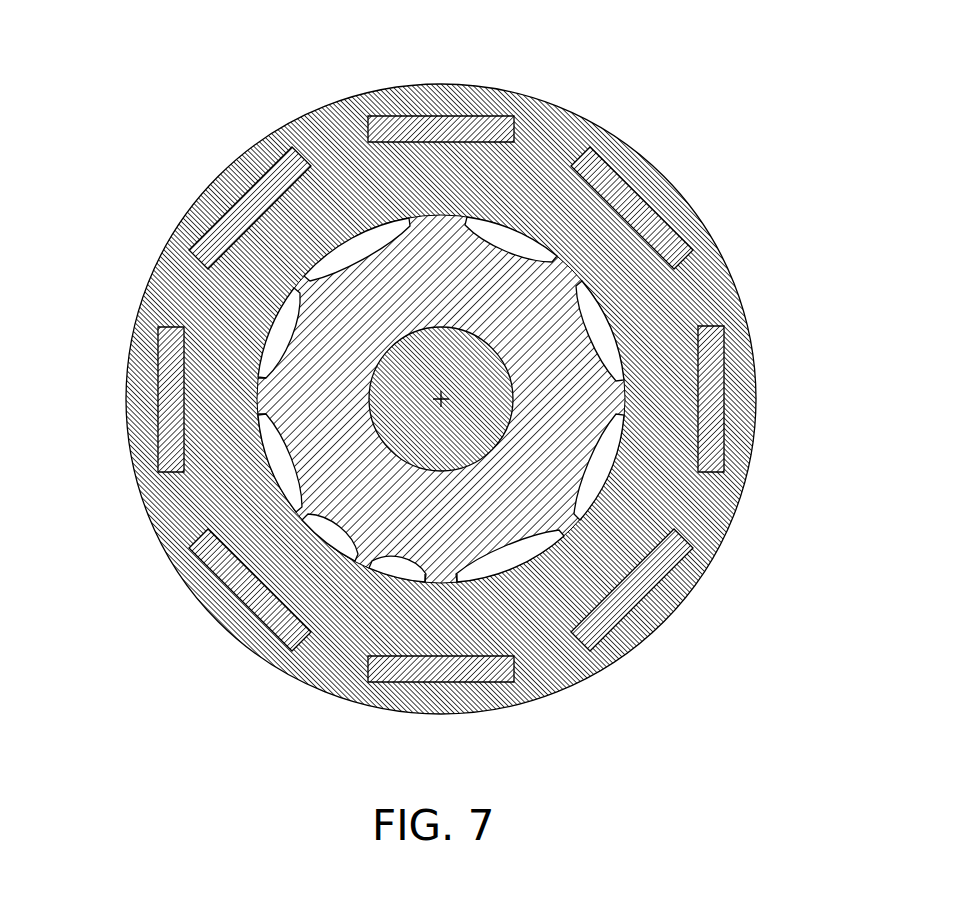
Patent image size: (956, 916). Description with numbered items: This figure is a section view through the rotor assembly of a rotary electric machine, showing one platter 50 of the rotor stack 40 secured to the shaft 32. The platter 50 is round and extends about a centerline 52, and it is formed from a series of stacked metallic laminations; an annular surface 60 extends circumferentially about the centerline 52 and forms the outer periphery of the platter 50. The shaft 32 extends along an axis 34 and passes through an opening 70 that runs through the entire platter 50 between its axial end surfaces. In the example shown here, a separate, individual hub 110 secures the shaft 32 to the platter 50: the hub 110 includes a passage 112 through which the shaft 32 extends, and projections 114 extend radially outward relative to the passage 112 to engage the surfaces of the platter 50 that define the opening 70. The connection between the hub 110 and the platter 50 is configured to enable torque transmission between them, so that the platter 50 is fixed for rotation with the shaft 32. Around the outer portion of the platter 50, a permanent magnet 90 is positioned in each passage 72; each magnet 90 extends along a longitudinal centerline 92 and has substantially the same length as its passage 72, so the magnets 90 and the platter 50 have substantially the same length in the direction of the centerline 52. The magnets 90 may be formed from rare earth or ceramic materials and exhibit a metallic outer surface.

The rotor stack 40 is at (438, 388).
The shaft 32 is at (419, 447).
The axis 34 is at (563, 299).
The centerline 52 is at (445, 396).
The platter 50 is at (474, 401).
The annular surface 60 is at (574, 688).
The opening 70 is at (614, 458).
The passage 72 is at (740, 400).
The permanent magnet 90 is at (688, 571).
The longitudinal centerline 92 is at (485, 399).
The hub 110 is at (358, 530).
The passage 112 is at (352, 406).
The projections 114 is at (442, 578).